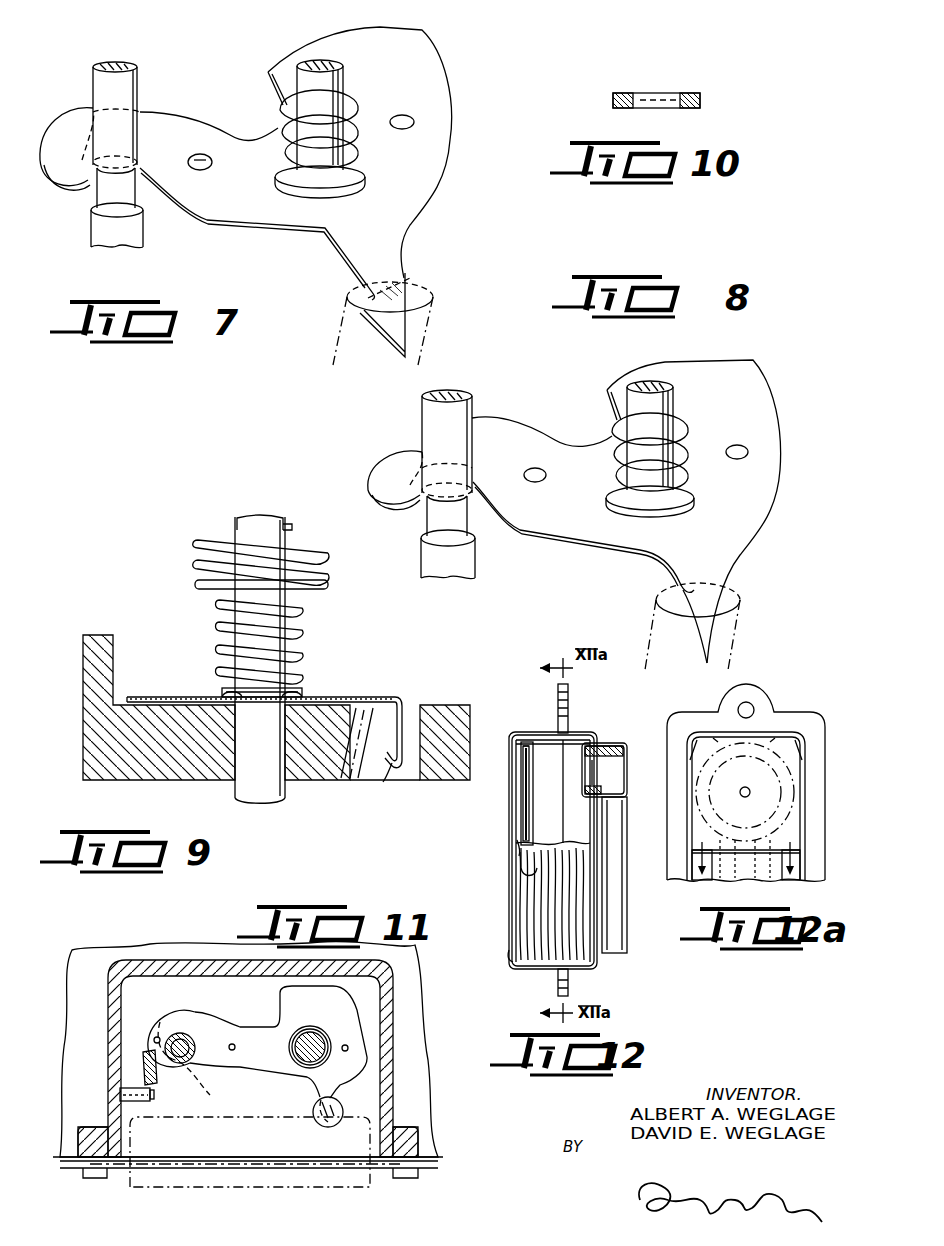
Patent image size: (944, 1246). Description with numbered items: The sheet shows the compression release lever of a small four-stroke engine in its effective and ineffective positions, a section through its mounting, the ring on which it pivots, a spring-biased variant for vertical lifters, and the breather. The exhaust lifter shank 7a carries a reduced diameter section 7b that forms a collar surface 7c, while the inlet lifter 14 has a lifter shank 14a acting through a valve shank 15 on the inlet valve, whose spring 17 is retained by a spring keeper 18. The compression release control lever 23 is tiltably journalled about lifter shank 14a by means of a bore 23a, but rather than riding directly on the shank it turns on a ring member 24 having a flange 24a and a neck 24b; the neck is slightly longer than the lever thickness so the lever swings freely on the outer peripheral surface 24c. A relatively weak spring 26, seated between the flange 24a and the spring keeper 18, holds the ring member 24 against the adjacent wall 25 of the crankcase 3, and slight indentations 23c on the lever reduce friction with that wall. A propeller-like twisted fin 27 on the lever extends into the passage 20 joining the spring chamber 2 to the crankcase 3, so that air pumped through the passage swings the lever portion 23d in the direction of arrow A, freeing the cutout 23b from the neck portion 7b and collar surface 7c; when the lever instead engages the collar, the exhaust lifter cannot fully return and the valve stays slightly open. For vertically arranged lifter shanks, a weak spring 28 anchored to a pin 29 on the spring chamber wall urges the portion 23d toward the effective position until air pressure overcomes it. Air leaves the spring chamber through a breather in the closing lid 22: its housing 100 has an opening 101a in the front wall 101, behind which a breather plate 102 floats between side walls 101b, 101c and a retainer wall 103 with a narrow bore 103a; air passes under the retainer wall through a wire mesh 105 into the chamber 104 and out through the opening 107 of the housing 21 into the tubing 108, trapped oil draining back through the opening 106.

In FIG. 11, the spring chamber 2 is at (130, 1005).
In FIG. 9, the housing or crankcase 3 is at (455, 706).
In FIG. 7, the lifter shank 7a is at (97, 242).
In FIG. 8, the lifter shank 7a is at (472, 553).
In FIG. 11, the lifter shank 7a is at (178, 1063).
In FIG. 7, the reduced diameter section 7b is at (104, 198).
In FIG. 8, the reduced diameter section 7b is at (440, 520).
In FIG. 11, the reduced diameter section 7b is at (190, 1054).
In FIG. 7, the collar surface 7c is at (100, 196).
In FIG. 8, the collar surface 7c is at (430, 503).
In FIG. 7, the lifter 14 is at (306, 58).
In FIG. 8, the lifter 14 is at (620, 386).
In FIG. 7, the lifter shank 14a is at (336, 80).
In FIG. 8, the lifter shank 14a is at (662, 412).
In FIG. 9, the lifter shank 14a is at (262, 808).
In FIG. 11, the lifter shank 14a is at (312, 1032).
In FIG. 9, the valve shank 15 is at (255, 522).
In FIG. 9, the spring 17 is at (200, 540).
In FIG. 9, the spring keeper 18 is at (330, 585).
In FIG. 7, the passage 20 is at (420, 290).
In FIG. 8, the passage 20 is at (728, 598).
In FIG. 9, the passage 20 is at (375, 778).
In FIG. 11, the passage 20 is at (322, 1122).
In FIG. 11, the housing 21 is at (332, 1172).
In FIG. 12, the housing 21 is at (590, 718).
In FIG. 12A, the housing 21 is at (786, 698).
In FIG. 12, the closing lid 22 is at (580, 733).
In FIG. 7, the compression release control lever 23 is at (190, 128).
In FIG. 8, the compression release control lever 23 is at (528, 438).
In FIG. 9, the compression release control lever 23 is at (148, 697).
In FIG. 11, the compression release control lever 23 is at (200, 1012).
In FIG. 9, the bore 23a is at (225, 696).
In FIG. 7, the cutout 23b is at (80, 108).
In FIG. 8, the cutout 23b is at (410, 472).
In FIG. 11, the cutout 23b is at (160, 1022).
In FIG. 7, the indentations 23c is at (414, 123).
In FIG. 8, the indentations 23c is at (750, 452).
In FIG. 9, the indentations 23c is at (195, 697).
In FIG. 11, the indentations 23c is at (234, 1044).
In FIG. 7, the lever portion 23d is at (57, 146).
In FIG. 8, the lever portion 23d is at (376, 466).
In FIG. 11, the lever portion 23d is at (172, 1010).
In FIG. 7, the ring member 24 is at (370, 172).
In FIG. 10, the ring member 24 is at (706, 86).
In FIG. 8, the ring member 24 is at (698, 498).
In FIG. 9, the ring member 24 is at (305, 688).
In FIG. 11, the ring member 24 is at (325, 1032).
In FIG. 10, the flange 24a is at (702, 97).
In FIG. 9, the flange 24a is at (298, 680).
In FIG. 10, the neck 24b is at (702, 105).
In FIG. 10, the outer peripheral surface 24c is at (612, 105).
In FIG. 9, the adjacent wall 25 is at (433, 705).
In FIG. 7, the spring 26 is at (358, 100).
In FIG. 8, the spring 26 is at (690, 428).
In FIG. 9, the spring 26 is at (302, 625).
In FIG. 9, the fin 27 is at (397, 772).
In FIG. 11, the fin 27 is at (330, 1127).
In FIG. 11, the weak spring 28 is at (147, 1063).
In FIG. 11, the pin 29 is at (124, 1092).
In FIG. 12, the housing 100 is at (538, 972).
In FIG. 12, the front wall 101 is at (514, 884).
In FIG. 12, the opening 101a is at (516, 838).
In FIG. 12A, the opening 101a is at (712, 720).
In FIG. 12, the side wall 101b is at (512, 745).
In FIG. 12, the side wall 101c is at (518, 862).
In FIG. 12, the breather plate 102 is at (523, 810).
In FIG. 12A, the breather plate 102 is at (690, 745).
In FIG. 12, the retainer wall 103 is at (540, 815).
In FIG. 12A, the retainer wall 103 is at (798, 742).
In FIG. 12, the narrow bore 103a is at (536, 788).
In FIG. 12A, the narrow bore 103a is at (740, 792).
In FIG. 12, the chamber 104 is at (578, 832).
In FIG. 12, the wire mesh 105 is at (535, 922).
In FIG. 12A, the wire mesh 105 is at (727, 857).
In FIG. 12, the opening 106 is at (510, 955).
In FIG. 12, the opening 107 is at (592, 772).
In FIG. 12, the tubing 108 is at (618, 898).
In FIG. 8, the arrow A is at (390, 398).